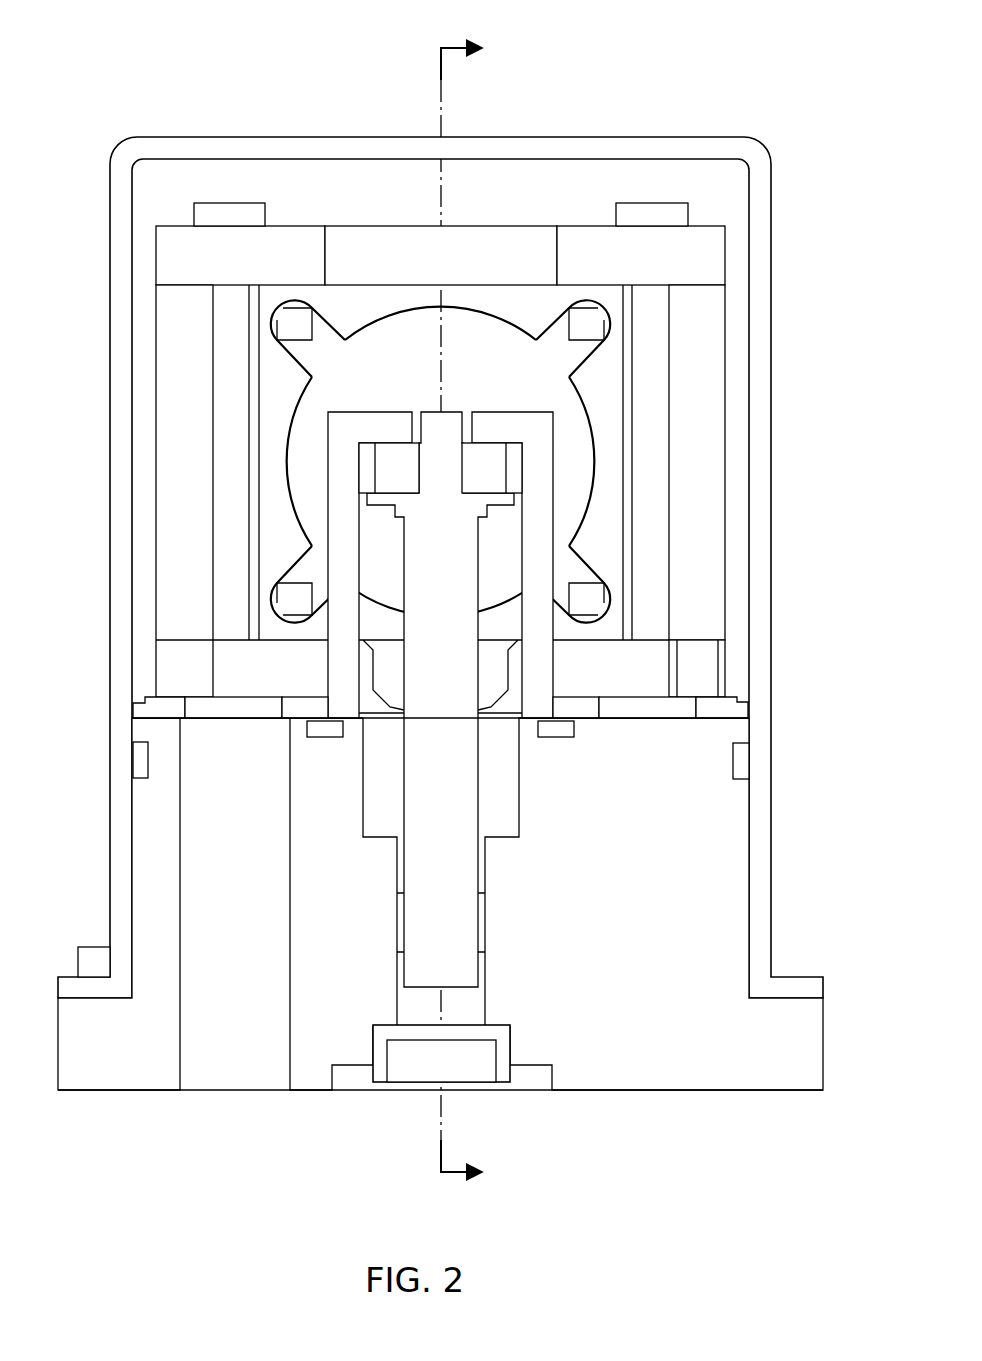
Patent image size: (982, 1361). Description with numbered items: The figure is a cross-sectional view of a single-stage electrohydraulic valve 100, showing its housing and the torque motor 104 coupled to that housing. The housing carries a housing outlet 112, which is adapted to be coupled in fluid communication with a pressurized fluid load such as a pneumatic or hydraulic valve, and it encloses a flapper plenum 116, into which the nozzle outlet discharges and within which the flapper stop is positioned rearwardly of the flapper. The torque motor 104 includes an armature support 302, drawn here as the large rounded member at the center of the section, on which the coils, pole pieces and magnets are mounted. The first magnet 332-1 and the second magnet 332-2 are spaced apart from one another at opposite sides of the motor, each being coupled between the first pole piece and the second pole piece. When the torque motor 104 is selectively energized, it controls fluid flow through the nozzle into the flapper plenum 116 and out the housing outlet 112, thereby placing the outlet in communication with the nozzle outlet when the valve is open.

The single-stage electrohydraulic valve 100 is at (127, 98).
The torque motor 104 is at (798, 378).
The armature support 302 is at (500, 312).
The first magnet 332-1 is at (160, 503).
The second magnet 332-2 is at (720, 503).
The flapper plenum 116 is at (516, 798).
The housing outlet 112 is at (467, 1062).